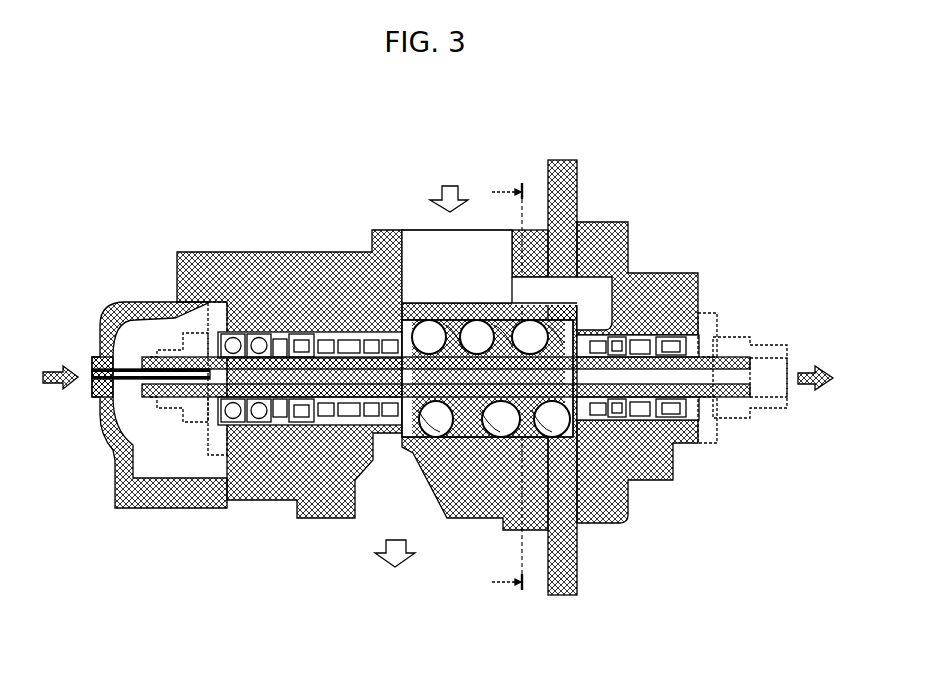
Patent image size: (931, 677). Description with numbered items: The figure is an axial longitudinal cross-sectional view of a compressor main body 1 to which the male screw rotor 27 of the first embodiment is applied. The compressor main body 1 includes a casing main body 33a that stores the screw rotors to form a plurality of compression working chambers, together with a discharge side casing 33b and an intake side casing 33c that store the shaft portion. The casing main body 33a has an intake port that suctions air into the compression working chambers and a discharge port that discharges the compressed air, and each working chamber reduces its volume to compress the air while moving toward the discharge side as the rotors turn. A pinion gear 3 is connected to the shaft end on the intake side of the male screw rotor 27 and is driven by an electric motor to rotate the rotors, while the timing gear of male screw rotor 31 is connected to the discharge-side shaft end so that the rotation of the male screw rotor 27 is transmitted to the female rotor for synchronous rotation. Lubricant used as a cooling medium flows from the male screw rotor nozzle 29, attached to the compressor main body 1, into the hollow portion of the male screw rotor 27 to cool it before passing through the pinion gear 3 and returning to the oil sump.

The compressor main body 1 is at (149, 137).
The casing main body 33a is at (303, 262).
The discharge side casing 33b is at (160, 302).
The intake side casing 33c is at (670, 275).
The male screw rotor nozzle 29 is at (104, 408).
The timing gear of male screw rotor 31 is at (192, 412).
The male screw rotor 27 is at (580, 405).
The pinion gear 3 is at (735, 412).